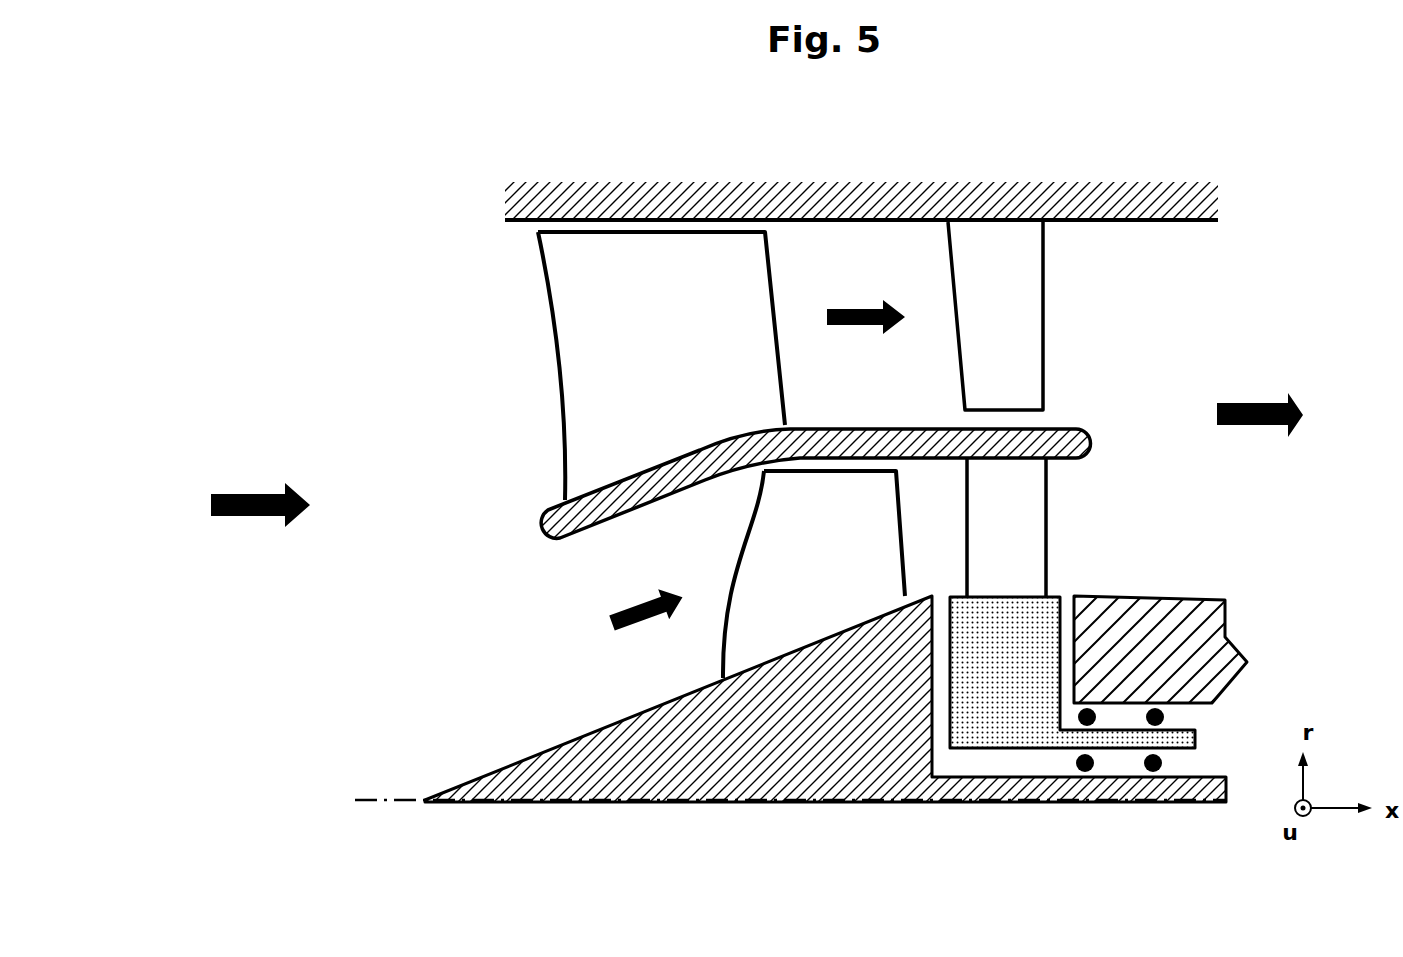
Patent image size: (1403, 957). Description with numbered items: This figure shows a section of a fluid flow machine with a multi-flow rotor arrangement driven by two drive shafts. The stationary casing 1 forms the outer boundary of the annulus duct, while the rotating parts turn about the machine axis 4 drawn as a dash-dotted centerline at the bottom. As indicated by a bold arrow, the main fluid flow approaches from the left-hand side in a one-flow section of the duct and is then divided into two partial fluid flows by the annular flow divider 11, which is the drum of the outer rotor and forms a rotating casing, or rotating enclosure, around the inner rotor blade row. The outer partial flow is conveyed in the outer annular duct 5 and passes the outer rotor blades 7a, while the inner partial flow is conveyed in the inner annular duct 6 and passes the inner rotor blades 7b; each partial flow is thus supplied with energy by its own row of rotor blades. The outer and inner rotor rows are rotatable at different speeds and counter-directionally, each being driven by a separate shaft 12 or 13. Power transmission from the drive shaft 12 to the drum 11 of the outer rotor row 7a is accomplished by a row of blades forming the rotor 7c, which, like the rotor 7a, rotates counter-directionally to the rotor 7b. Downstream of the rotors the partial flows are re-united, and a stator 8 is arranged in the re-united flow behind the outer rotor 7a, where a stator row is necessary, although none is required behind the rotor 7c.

The casing 1 is at (700, 197).
The machine axis 4 is at (567, 805).
The outer annular duct 5 is at (476, 233).
The inner annular duct 6 is at (476, 540).
The outer rotor blades 7a is at (737, 255).
The inner rotor blades 7b is at (850, 568).
The rotor blade row 7c is at (1022, 522).
The stator vane 8 is at (1022, 280).
The annular flow divider 11 is at (1063, 432).
The drive shaft 12 is at (1170, 745).
The drive shaft 13 is at (1220, 802).